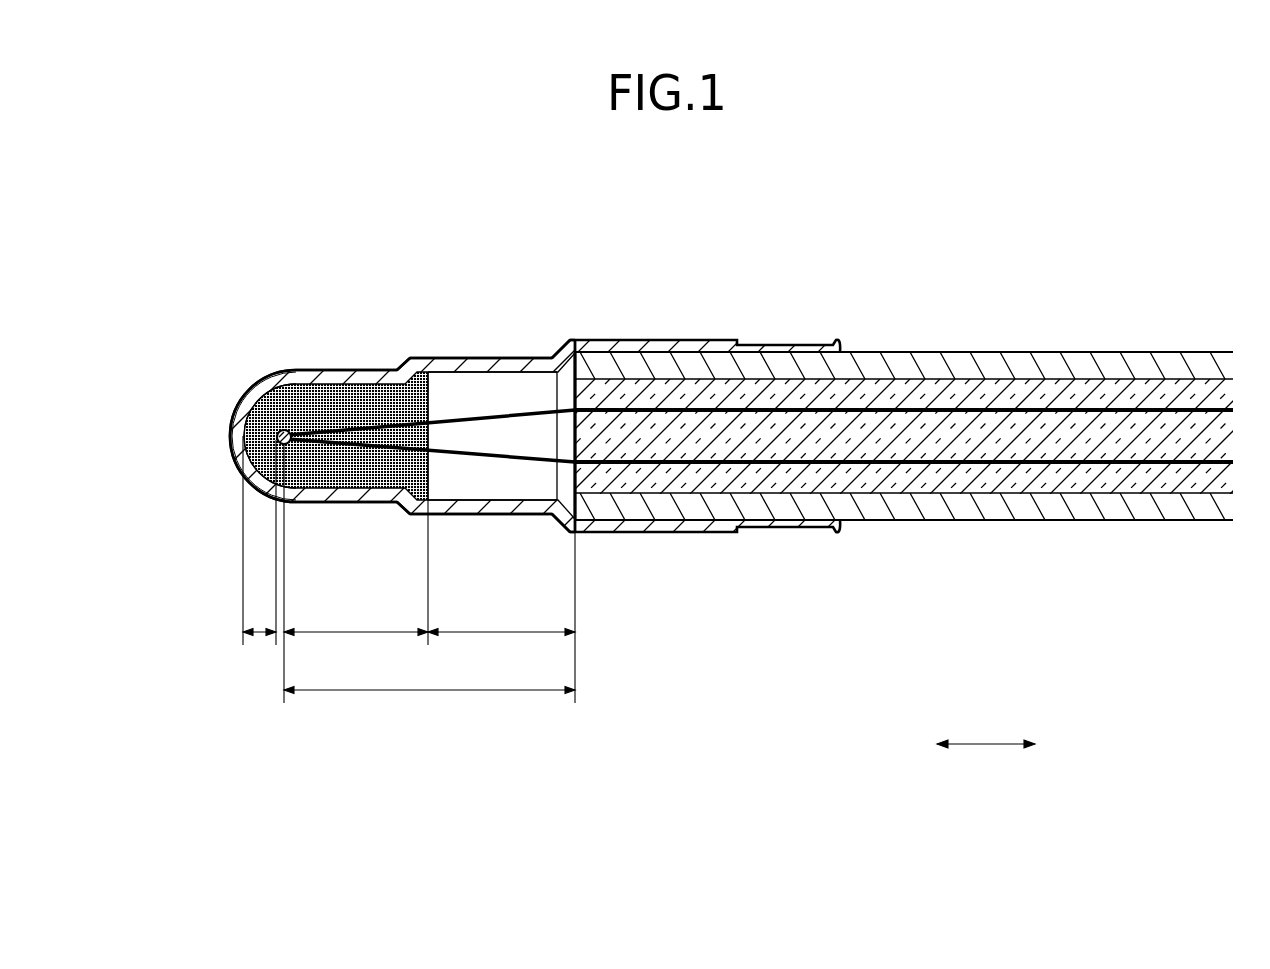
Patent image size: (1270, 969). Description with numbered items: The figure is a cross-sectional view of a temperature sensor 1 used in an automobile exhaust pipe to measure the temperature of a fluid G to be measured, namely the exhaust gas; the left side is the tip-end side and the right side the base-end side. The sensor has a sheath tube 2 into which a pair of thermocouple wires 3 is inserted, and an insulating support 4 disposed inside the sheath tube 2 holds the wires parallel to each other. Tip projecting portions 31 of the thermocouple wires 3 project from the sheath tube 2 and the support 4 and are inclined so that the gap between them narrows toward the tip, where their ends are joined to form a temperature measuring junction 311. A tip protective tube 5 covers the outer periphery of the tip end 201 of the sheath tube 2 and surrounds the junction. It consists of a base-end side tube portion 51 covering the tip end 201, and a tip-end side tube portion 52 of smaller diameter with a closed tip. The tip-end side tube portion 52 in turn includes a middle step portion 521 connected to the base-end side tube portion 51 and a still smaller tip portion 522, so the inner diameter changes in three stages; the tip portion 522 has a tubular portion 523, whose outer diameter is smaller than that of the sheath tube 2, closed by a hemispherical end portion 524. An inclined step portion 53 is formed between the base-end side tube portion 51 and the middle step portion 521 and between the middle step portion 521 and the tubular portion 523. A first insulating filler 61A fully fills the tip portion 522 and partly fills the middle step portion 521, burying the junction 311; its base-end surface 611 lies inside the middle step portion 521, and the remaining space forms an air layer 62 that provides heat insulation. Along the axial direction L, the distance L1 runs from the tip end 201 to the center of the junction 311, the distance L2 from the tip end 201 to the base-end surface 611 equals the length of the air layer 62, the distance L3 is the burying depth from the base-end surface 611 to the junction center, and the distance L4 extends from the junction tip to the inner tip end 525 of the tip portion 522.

The temperature sensor 1 is at (1165, 602).
The sheath tube 2 is at (942, 358).
The thermocouple wires 3 is at (1105, 408).
The insulating support 4 is at (1008, 430).
The tip protective tube 5 is at (608, 332).
The tip projecting portions 31 is at (464, 458).
The base-end side tube portion 51 is at (665, 347).
The tip-end side tube portion 52 is at (414, 365).
The inclined step portion 53 is at (401, 360).
The first insulating filler 61A is at (322, 472).
The air layer 62 is at (527, 482).
The tip end of the sheath tube 201 is at (574, 426).
The temperature measuring junction 311 is at (277, 438).
The middle step portion 521 is at (513, 365).
The tip portion 522 is at (300, 362).
The tubular portion 523 is at (363, 378).
The hemispherical end portion 524 is at (243, 398).
The inner tip end 525 is at (243, 437).
The base-end surface 611 is at (432, 400).
The fluid to be measured G is at (221, 332).
The axial direction L is at (986, 731).
The distance from tip end of sheath tube to center of junction L1 is at (429, 676).
The distance from tip end of sheath tube to base-end surface of filler L2 is at (501, 618).
The burying depth of junction into filler L3 is at (356, 618).
The distance from junction tip end to inner tip end L4 is at (235, 617).